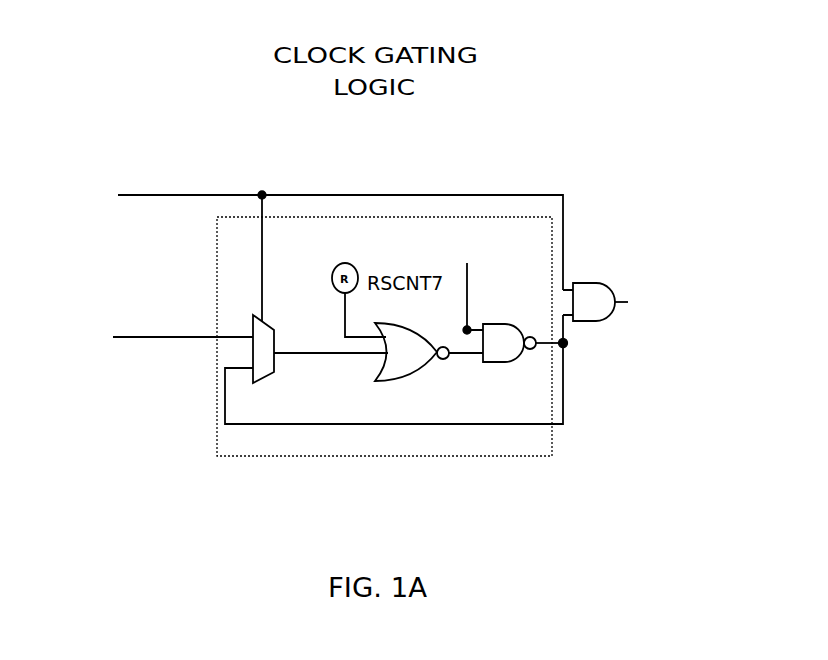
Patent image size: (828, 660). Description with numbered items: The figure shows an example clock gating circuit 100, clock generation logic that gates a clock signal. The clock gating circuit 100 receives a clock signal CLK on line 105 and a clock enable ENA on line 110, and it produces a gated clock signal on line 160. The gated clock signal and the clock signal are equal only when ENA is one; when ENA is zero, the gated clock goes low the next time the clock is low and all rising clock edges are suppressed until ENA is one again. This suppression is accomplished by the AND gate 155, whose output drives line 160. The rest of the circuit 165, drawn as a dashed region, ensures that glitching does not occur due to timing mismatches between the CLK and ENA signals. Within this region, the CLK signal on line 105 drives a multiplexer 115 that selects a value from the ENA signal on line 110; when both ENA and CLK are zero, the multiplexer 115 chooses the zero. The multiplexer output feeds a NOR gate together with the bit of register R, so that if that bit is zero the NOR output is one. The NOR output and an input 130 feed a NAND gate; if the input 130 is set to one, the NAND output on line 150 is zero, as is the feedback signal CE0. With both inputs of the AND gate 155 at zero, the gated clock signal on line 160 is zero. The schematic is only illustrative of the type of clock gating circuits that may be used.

The clock gating circuit 100 is at (133, 160).
The line 105 is at (147, 197).
The line 110 is at (162, 342).
The multiplexer 115 is at (252, 322).
The input 130 is at (467, 282).
The line 150 is at (572, 350).
The AND gate 155 is at (588, 294).
The line 160 is at (629, 296).
The rest of the circuit 165 is at (312, 456).